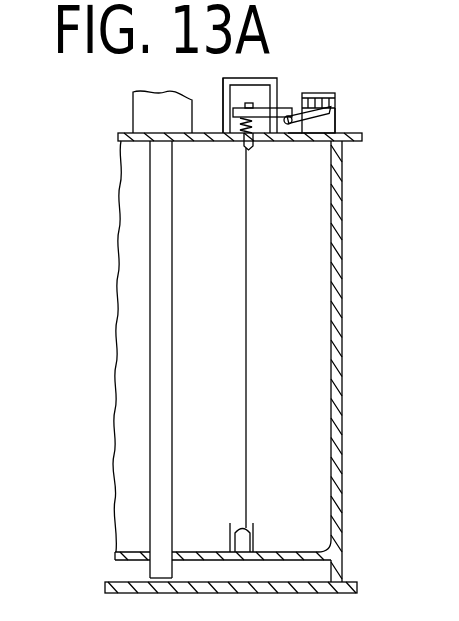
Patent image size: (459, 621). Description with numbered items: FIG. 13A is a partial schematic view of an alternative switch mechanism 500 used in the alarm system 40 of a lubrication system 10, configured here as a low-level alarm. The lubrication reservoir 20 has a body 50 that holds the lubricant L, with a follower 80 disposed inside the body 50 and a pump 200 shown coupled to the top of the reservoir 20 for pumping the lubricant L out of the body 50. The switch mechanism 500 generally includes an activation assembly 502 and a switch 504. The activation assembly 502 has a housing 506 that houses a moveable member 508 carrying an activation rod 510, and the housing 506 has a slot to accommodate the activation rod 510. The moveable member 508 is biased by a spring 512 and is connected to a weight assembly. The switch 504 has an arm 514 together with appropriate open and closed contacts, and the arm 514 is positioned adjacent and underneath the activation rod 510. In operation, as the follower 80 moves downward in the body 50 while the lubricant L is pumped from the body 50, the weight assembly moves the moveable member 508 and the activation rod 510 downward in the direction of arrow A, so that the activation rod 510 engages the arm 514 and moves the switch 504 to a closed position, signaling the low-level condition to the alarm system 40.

The lubrication system 10 is at (348, 312).
The lubrication reservoir 20 is at (343, 482).
The body 50 is at (343, 212).
The follower 80 is at (313, 550).
The pump 200 is at (148, 110).
The activation assembly 502 is at (233, 78).
The housing 506 is at (223, 103).
The activation rod 510 is at (252, 108).
The spring 512 is at (257, 123).
The moveable member 508 is at (252, 140).
The switch mechanism 500 is at (320, 88).
The switch 504 is at (332, 115).
The arm 514 is at (336, 120).
The alarm system 40 is at (298, 70).
The arrow A is at (289, 92).
The lubricant L is at (310, 573).